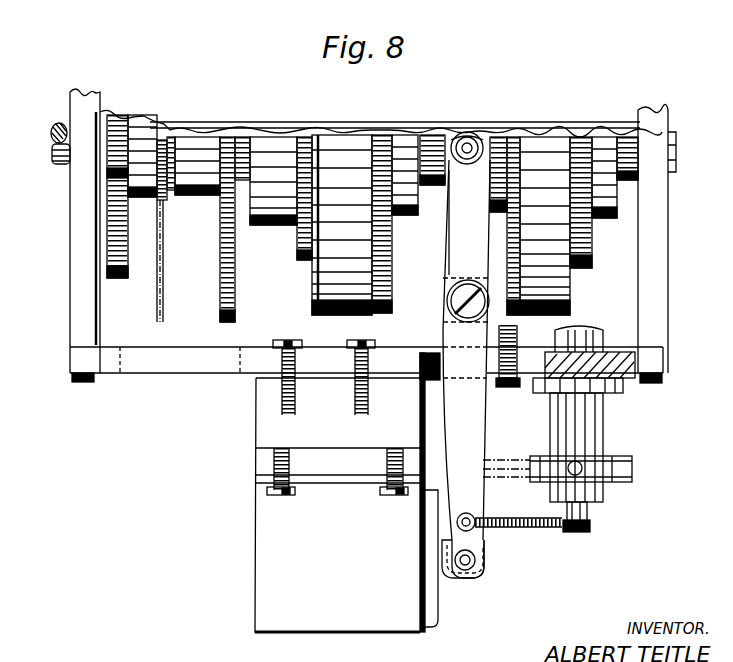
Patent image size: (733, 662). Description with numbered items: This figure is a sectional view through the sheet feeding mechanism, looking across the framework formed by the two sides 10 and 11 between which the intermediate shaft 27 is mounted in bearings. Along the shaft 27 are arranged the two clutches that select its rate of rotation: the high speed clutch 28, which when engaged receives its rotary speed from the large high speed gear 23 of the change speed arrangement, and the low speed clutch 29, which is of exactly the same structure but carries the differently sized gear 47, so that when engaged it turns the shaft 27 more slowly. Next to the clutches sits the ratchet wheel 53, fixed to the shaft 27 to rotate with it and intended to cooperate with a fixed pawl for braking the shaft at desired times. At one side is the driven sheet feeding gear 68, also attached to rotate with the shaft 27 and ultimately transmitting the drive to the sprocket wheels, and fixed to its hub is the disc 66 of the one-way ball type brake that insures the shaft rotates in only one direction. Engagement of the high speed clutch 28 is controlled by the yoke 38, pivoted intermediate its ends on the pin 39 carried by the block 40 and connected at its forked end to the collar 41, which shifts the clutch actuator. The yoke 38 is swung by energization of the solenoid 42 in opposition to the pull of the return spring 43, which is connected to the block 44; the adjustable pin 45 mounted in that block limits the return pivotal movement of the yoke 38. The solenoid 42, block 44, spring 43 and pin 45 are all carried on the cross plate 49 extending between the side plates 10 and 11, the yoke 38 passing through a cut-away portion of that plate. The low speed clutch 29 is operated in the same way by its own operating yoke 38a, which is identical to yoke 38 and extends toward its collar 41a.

The side 10 is at (70, 304).
The side 11 is at (664, 315).
The large gear 23 is at (592, 252).
The intermediate shaft 27 is at (62, 166).
The high speed clutch 28 is at (574, 288).
The low speed clutch 29 is at (306, 295).
The yoke 38 is at (486, 414).
The operating yoke 38a is at (476, 125).
The pin 39 is at (448, 299).
The block 40 is at (442, 344).
The collar 41 is at (444, 201).
The collar 41a is at (277, 228).
The solenoid 42 is at (356, 552).
The return spring 43 is at (528, 530).
The block 44 is at (603, 428).
The adjustable pin 45 is at (504, 458).
The gear 47 is at (395, 253).
The cross plate 49 is at (663, 360).
The ratchet wheel 53 is at (220, 308).
The disc 66 is at (161, 286).
The driven sheet feeding gear 68 is at (118, 278).